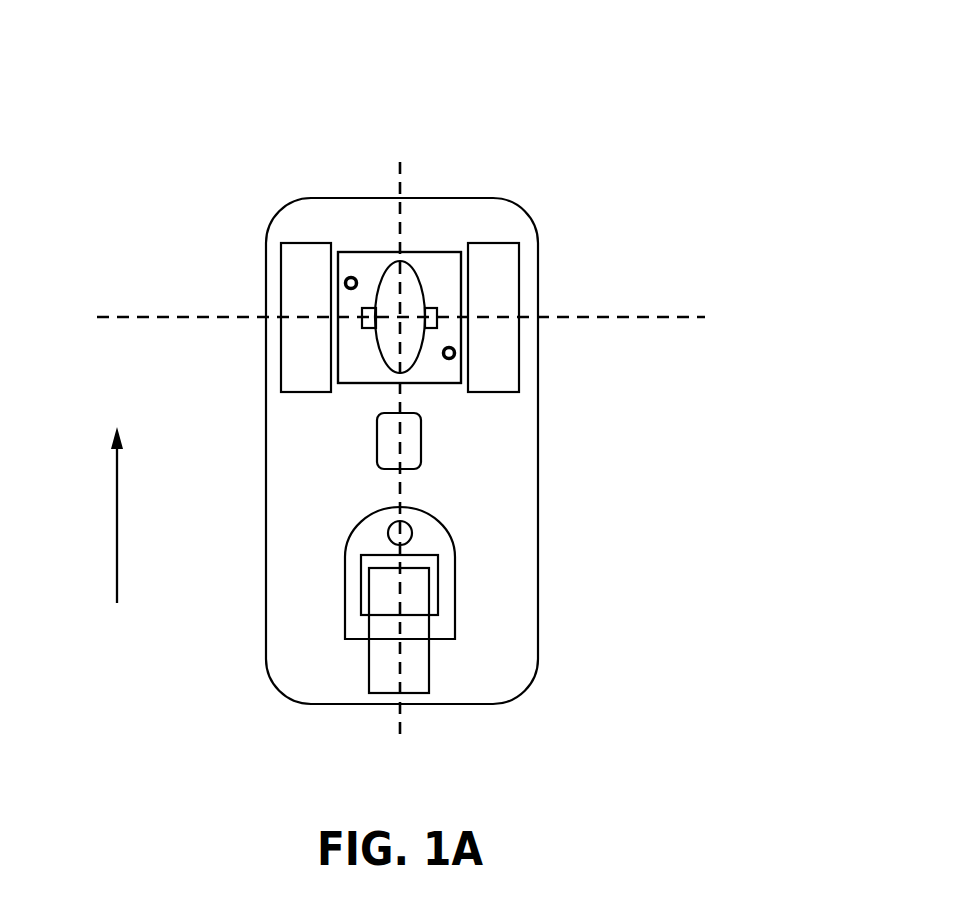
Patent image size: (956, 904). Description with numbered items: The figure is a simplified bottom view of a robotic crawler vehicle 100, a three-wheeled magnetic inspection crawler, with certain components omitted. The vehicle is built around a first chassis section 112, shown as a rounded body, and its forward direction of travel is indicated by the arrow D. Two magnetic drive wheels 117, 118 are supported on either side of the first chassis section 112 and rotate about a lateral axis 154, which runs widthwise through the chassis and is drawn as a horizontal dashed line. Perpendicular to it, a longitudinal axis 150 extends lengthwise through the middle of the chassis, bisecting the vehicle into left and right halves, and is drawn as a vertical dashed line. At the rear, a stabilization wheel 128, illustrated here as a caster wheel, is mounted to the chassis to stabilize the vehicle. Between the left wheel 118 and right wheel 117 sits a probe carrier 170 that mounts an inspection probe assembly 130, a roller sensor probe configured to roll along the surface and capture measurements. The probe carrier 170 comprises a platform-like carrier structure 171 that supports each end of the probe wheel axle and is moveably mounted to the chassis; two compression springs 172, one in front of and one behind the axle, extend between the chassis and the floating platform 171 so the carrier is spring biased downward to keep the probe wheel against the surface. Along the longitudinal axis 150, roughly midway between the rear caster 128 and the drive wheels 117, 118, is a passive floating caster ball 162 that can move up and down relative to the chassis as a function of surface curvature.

The robotic crawler vehicle 100 is at (119, 86).
The first chassis section 112 is at (307, 210).
The magnetic drive wheel 117 is at (294, 341).
The magnetic drive wheel 118 is at (511, 260).
The stabilization wheel 128 is at (412, 585).
The inspection probe assembly 130 is at (426, 298).
The longitudinal axis 150 is at (400, 187).
The lateral axis 154 is at (147, 317).
The caster ball 162 is at (433, 425).
The probe carrier 170 is at (440, 241).
The probe carrier platform 171 is at (352, 368).
The compression spring 172 is at (336, 280).
The forward direction of travel D is at (117, 503).